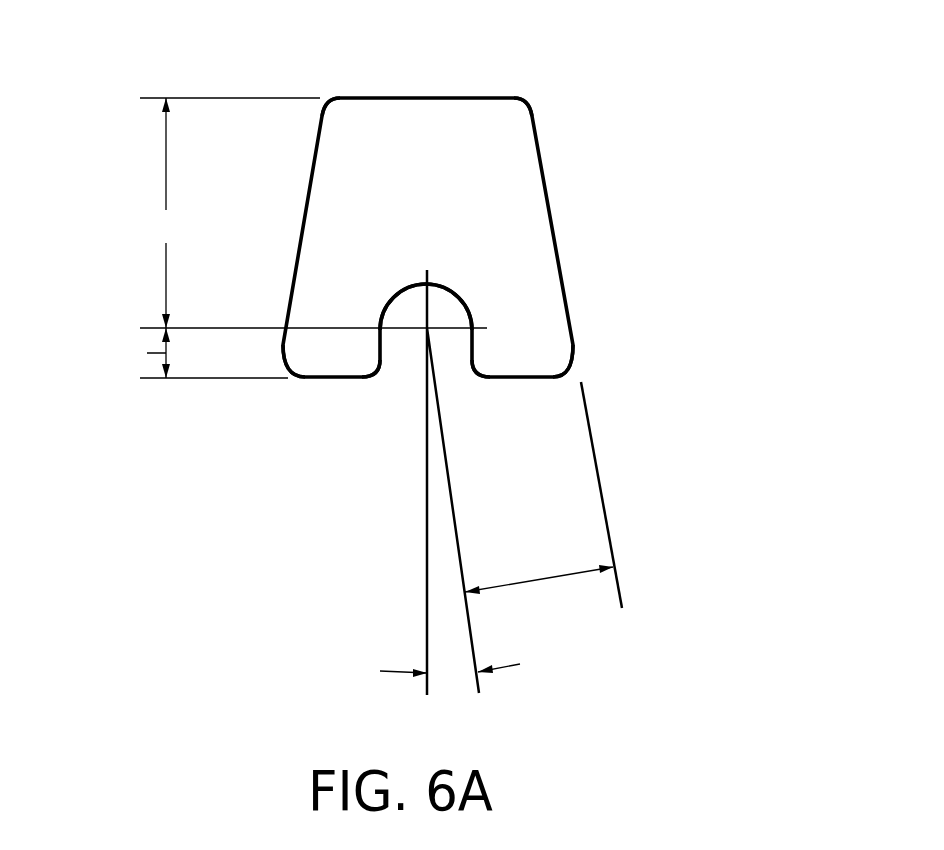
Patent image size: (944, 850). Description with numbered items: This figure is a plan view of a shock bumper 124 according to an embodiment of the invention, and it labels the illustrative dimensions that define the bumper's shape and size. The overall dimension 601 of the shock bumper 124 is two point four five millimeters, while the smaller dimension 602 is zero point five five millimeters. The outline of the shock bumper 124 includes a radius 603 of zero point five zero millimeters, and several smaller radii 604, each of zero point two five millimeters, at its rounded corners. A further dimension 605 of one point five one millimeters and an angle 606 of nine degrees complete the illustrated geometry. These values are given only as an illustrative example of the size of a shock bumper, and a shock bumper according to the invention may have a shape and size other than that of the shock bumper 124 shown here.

The shock bumper 124 is at (650, 306).
The dimension 601 is at (313, 213).
The dimension 602 is at (158, 353).
The radius 603 is at (452, 288).
The radii 604 is at (332, 99).
The dimension 605 is at (540, 580).
The angle 606 is at (397, 673).